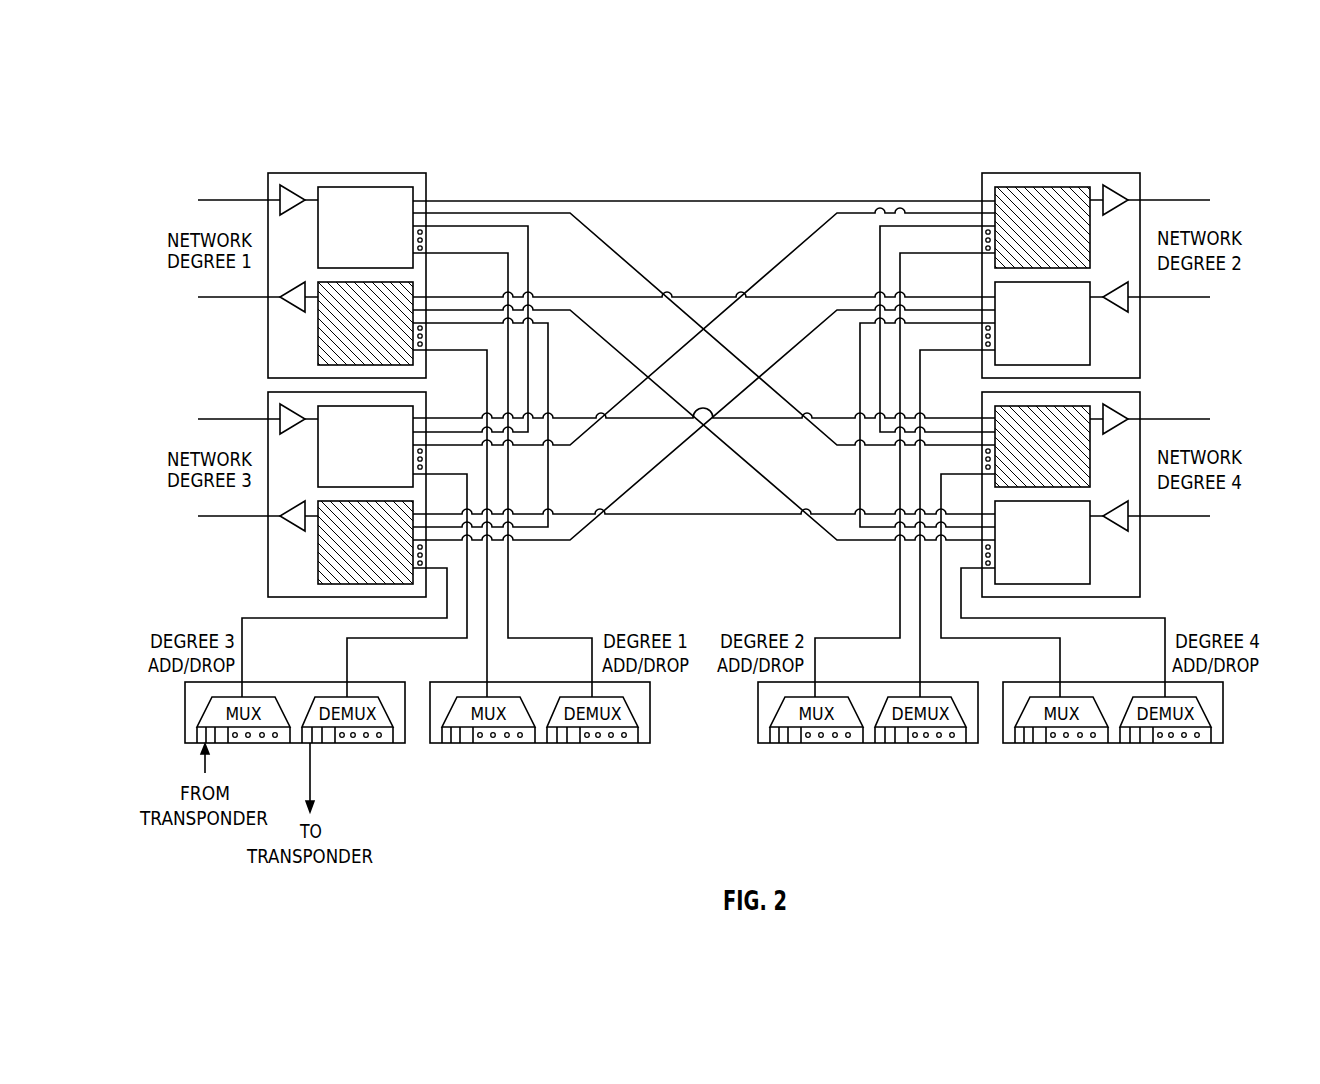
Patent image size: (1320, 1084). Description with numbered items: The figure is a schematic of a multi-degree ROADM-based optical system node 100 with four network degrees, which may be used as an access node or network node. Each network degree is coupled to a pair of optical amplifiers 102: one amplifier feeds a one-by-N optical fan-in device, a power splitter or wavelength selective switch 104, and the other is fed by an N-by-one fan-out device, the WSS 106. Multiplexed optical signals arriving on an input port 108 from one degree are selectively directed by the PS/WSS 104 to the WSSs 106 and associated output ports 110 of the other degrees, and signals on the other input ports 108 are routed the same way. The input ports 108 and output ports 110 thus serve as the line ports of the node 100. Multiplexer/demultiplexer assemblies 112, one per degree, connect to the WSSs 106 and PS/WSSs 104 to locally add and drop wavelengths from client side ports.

The optical system node 100 is at (1126, 139).
The optical amplifier 102 is at (281, 193).
The power splitter or wavelength selective switch 104 is at (318, 248).
The wavelength selective switch 106 is at (318, 320).
The input port 108 is at (210, 419).
The output port 110 is at (192, 537).
The multiplexer/demultiplexer assembly 112 is at (394, 744).